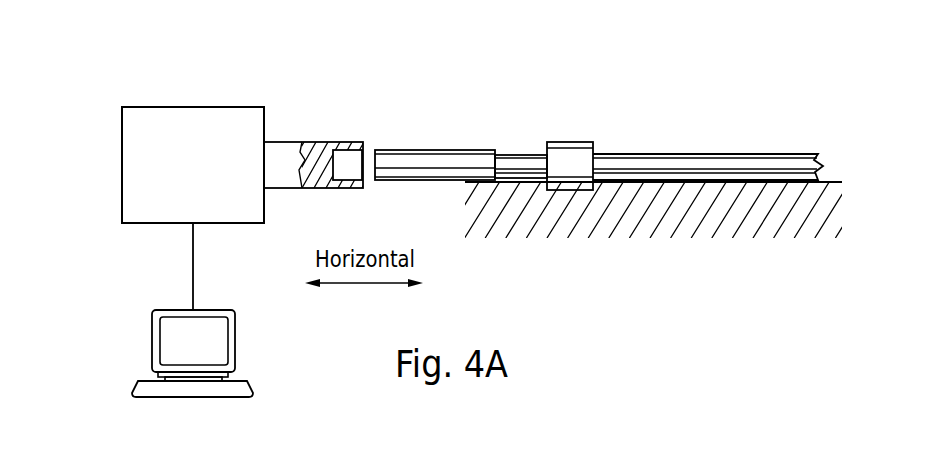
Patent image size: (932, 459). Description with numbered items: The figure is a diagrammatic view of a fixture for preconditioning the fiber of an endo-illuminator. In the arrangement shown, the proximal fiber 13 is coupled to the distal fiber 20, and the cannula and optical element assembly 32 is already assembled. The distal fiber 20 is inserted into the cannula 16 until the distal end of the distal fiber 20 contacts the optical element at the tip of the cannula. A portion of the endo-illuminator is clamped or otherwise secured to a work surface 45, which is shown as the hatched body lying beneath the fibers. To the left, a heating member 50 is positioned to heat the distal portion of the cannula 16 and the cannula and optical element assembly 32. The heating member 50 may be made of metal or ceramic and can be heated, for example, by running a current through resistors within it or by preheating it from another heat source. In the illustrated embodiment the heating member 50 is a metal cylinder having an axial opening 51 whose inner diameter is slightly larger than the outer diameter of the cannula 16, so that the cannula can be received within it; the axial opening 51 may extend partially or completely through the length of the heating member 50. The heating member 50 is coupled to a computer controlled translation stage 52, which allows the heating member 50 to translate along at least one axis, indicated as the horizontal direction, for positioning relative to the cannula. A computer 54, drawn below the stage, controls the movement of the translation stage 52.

The computer controlled translation stage 52 is at (207, 107).
The heating member 50 is at (287, 140).
The axial opening 51 is at (355, 165).
The cannula and optical element assembly 32 is at (456, 120).
The cannula 16 is at (430, 182).
The distal fiber 20 is at (532, 155).
The proximal fiber 13 is at (708, 152).
The work surface 45 is at (827, 182).
The computer 54 is at (235, 337).